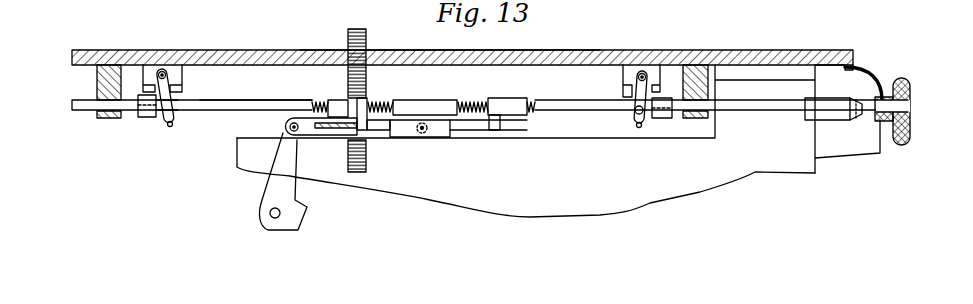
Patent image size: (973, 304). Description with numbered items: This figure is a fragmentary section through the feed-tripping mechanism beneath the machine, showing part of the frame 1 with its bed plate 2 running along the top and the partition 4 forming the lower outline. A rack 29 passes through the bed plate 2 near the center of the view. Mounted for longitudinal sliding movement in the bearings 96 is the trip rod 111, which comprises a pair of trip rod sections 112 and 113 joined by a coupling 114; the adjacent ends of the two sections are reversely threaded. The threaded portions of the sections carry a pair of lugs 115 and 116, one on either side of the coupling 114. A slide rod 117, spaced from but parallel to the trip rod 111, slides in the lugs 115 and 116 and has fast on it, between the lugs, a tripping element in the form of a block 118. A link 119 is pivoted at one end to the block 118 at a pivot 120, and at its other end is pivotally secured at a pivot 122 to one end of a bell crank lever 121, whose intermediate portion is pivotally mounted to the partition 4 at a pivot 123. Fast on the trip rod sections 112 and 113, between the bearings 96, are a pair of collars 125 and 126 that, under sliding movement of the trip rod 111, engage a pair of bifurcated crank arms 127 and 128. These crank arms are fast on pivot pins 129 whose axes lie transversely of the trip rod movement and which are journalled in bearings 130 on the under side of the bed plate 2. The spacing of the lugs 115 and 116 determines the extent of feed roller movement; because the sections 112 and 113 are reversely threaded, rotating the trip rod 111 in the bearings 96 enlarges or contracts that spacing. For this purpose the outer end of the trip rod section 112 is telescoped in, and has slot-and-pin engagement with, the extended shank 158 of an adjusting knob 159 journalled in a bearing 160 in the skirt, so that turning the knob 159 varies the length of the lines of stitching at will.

The frame 1 is at (547, 52).
The bed plate 2 is at (254, 58).
The partition 4 is at (517, 210).
The rack 29 is at (354, 31).
The bearing 96 is at (97, 83).
The trip rod 111 is at (77, 114).
The trip rod section 112 is at (750, 113).
The trip rod section 113 is at (212, 111).
The coupling 114 is at (416, 108).
The lug 115 is at (495, 108).
The lug 116 is at (345, 106).
The slide rod 117 is at (478, 131).
The block 118 is at (440, 138).
The link 119 is at (383, 131).
The pivot 120 is at (421, 135).
The bell crank lever 121 is at (272, 191).
The pivot 122 is at (291, 123).
The pivot 123 is at (270, 215).
The collar 125 is at (660, 119).
The collar 126 is at (145, 118).
The bifurcated crank arm 127 is at (637, 118).
The bifurcated crank arm 128 is at (176, 99).
The pivot pin 129 is at (166, 71).
The bearing 130 is at (150, 70).
The extended shank 158 is at (860, 116).
The adjusting knob 159 is at (911, 92).
The bearing 160 is at (876, 92).